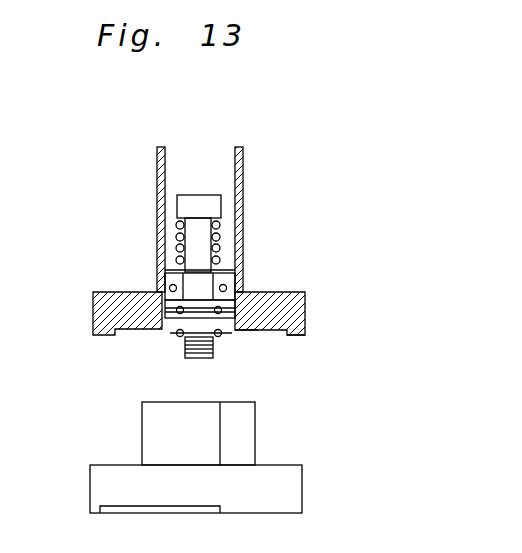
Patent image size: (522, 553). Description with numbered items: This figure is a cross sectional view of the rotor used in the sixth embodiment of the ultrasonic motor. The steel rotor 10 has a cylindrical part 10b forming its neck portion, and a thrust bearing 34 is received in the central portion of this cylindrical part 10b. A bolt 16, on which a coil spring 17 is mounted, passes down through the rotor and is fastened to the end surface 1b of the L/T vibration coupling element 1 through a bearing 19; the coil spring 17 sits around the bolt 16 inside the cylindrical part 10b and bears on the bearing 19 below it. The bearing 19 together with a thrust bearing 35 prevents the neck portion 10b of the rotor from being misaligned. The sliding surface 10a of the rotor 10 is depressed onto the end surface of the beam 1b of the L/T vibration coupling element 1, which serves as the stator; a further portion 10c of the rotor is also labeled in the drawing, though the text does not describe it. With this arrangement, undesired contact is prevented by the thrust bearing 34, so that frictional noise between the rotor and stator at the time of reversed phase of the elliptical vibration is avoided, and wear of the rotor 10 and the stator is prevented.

The L/T vibration coupling element 1 is at (285, 485).
The end surface 1b is at (240, 401).
The rotor 10 is at (307, 305).
The sliding surface 10a is at (305, 335).
The cylindrical part 10b is at (242, 160).
The plate recess 10c is at (258, 330).
The bolt 16 is at (193, 204).
The coil spring 17 is at (178, 232).
The bearing 19 is at (172, 288).
The thrust bearing 34 is at (173, 333).
The thrust bearing 35 is at (255, 292).